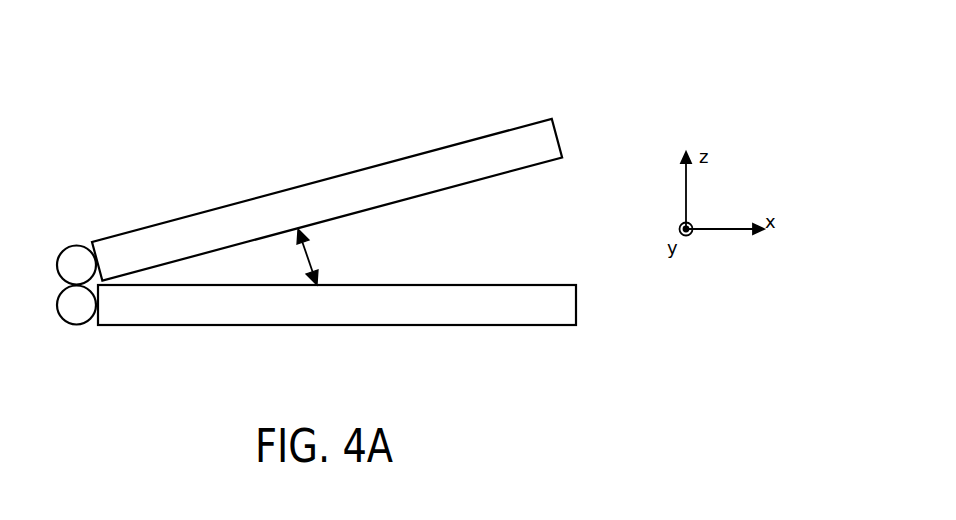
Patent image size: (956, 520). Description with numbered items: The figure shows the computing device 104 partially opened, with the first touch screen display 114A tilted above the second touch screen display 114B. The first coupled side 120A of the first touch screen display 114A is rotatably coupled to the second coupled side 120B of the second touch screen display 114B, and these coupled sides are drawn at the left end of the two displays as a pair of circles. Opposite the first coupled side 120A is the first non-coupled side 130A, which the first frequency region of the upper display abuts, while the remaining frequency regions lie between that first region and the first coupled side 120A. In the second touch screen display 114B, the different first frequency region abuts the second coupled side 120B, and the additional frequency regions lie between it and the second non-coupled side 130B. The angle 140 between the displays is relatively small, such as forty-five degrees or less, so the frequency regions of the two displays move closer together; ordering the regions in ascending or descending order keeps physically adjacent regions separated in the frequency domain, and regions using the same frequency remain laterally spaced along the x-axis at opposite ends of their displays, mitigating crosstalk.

The computing device 104 is at (549, 63).
The first touch screen display 114A is at (447, 188).
The second touch screen display 114B is at (472, 285).
The first coupled side 120A is at (87, 247).
The second coupled side 120B is at (95, 325).
The first non-coupled side 130A is at (557, 133).
The second non-coupled side 130B is at (577, 317).
The angle 140 is at (323, 257).